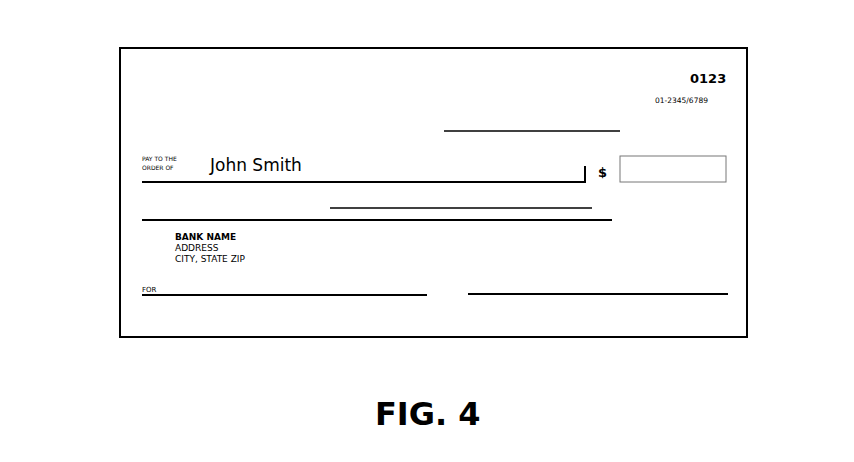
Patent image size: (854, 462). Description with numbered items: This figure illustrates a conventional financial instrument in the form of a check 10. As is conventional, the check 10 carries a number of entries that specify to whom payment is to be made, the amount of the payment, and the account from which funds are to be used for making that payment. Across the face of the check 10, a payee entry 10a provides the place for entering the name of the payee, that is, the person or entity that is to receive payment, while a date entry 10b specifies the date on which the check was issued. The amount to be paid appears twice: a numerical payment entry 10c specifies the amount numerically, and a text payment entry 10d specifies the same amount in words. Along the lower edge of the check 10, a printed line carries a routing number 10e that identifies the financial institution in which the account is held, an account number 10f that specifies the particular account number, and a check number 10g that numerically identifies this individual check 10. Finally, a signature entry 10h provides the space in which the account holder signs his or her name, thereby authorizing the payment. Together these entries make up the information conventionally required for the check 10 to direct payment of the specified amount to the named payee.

The check 10 is at (703, 46).
The payee entry 10a is at (197, 142).
The date entry 10b is at (493, 105).
The numerical payment entry 10c is at (703, 157).
The text payment entry 10d is at (192, 212).
The routing number 10e is at (160, 329).
The account number 10f is at (288, 329).
The check number 10g is at (473, 329).
The signature entry 10h is at (695, 277).